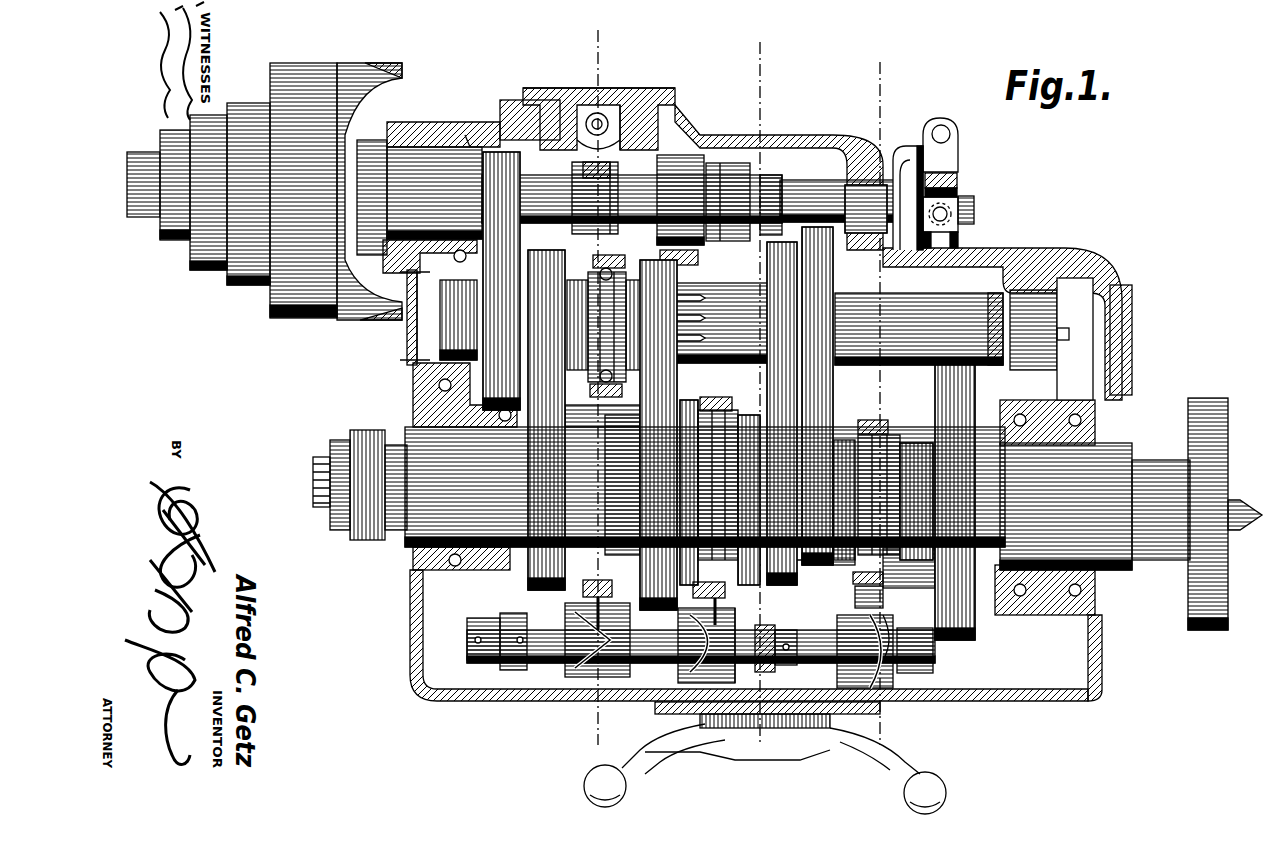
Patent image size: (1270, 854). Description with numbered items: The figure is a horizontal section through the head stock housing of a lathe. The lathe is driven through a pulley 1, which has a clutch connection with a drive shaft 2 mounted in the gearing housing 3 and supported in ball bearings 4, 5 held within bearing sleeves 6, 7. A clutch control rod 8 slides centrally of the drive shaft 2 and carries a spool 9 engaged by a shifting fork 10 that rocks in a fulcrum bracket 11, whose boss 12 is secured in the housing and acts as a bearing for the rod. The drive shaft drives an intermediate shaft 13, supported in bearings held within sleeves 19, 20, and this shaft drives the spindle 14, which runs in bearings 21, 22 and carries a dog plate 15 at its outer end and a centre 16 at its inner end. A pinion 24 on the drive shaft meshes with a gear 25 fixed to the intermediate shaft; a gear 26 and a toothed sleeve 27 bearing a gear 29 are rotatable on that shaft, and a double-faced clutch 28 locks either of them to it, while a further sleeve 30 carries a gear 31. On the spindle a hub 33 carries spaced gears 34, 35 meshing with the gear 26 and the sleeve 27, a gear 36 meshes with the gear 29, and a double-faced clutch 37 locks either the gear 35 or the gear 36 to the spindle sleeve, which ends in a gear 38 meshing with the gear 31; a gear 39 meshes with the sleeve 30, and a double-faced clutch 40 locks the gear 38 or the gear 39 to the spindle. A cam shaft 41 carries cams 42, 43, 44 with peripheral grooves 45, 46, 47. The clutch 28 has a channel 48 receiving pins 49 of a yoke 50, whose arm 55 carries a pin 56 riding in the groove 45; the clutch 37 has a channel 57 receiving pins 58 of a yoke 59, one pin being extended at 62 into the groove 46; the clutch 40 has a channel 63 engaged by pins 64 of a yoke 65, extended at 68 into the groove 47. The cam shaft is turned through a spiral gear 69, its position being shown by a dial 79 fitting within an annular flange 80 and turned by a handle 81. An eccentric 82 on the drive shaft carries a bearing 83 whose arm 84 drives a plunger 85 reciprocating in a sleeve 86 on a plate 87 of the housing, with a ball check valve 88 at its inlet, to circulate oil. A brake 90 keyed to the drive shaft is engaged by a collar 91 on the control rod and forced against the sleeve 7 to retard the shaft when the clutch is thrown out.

The pulley 1 is at (296, 322).
The drive shaft 2 is at (632, 199).
The gearing housing 3 is at (468, 134).
The ball bearing 4 is at (886, 63).
The ball bearing 5 is at (756, 43).
The bearing sleeve 6 is at (428, 148).
The bearing sleeve 7 is at (680, 158).
The clutch control rod 8 is at (806, 205).
The spool 9 is at (958, 238).
The shifting fork 10 is at (955, 163).
The fulcrum bracket 11 is at (903, 152).
The boss 12 is at (855, 193).
The intermediate shaft 13 is at (995, 305).
The spindle 14 is at (318, 488).
The dog plate 15 is at (1200, 400).
The centre 16 is at (1250, 525).
The sleeve 19 is at (410, 355).
The sleeve 20 is at (1045, 318).
The bearing 21 is at (396, 540).
The bearing 22 is at (1125, 452).
The pinion 24 is at (480, 178).
The gear 25 is at (485, 305).
The gear 26 is at (552, 257).
The sleeve 27 is at (710, 323).
The double-faced clutch 28 is at (593, 385).
The gear 29 is at (767, 256).
The sleeve 30 is at (898, 308).
The gear 31 is at (834, 276).
The hub 33 is at (705, 487).
The gear 34 is at (527, 575).
The gear 35 is at (650, 418).
The gear 36 is at (790, 572).
The double-faced clutch 37 is at (694, 414).
The gear 38 is at (815, 568).
The gear 39 is at (937, 397).
The double-faced clutch 40 is at (912, 460).
The cam shaft 41 is at (815, 645).
The cam 42 is at (575, 648).
The cam 43 is at (678, 630).
The cam 44 is at (845, 660).
The peripheral groove 45 is at (572, 650).
The peripheral groove 46 is at (735, 665).
The peripheral groove 47 is at (905, 643).
The circumferential channel 48 is at (615, 300).
The pins 49 is at (612, 262).
The yoke 50 is at (600, 258).
The arm 55 is at (586, 584).
The pin 56 is at (570, 606).
The circumferential channel 57 is at (726, 445).
The pins 58 is at (716, 403).
The yoke 59 is at (724, 590).
The extended pin 62 is at (733, 620).
The circumferential channel 63 is at (865, 440).
The pins 64 is at (886, 440).
The yoke 65 is at (883, 580).
The extended pin 68 is at (882, 616).
The spiral gear 69 is at (790, 635).
The dial 79 is at (715, 724).
The annular flange 80 is at (850, 732).
The handle 81 is at (904, 793).
The eccentric 82 is at (606, 175).
The bearing 83 is at (620, 186).
The arm 84 is at (578, 176).
The plunger 85 is at (612, 125).
The sleeve 86 is at (584, 126).
The plate 87 is at (656, 98).
The ball check valve 88 is at (585, 163).
The brake 90 is at (735, 186).
The collar 91 is at (776, 196).